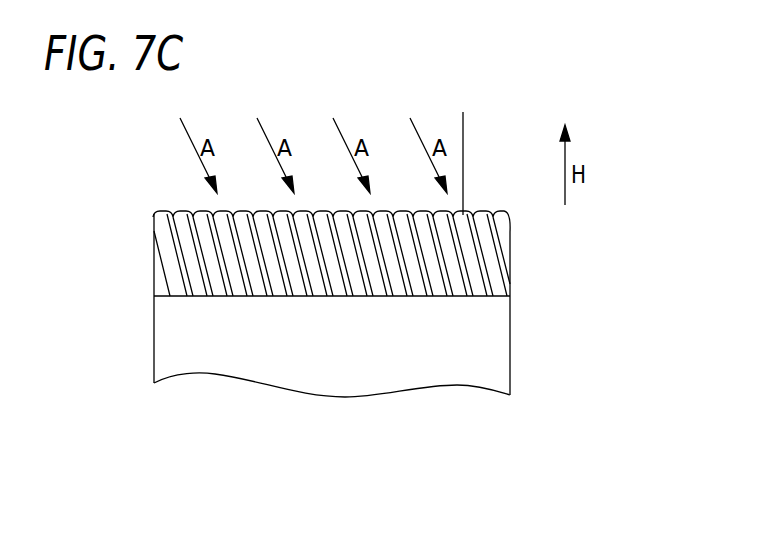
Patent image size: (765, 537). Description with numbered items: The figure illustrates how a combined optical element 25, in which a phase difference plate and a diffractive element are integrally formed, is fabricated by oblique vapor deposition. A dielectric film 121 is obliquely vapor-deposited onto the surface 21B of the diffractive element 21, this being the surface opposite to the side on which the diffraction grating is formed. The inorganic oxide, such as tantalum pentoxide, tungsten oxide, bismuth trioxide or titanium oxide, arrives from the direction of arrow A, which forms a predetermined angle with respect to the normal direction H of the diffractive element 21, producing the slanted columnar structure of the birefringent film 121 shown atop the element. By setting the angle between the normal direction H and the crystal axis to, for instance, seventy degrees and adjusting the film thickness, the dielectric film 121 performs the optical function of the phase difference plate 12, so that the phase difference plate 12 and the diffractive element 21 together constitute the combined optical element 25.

The dielectric film 121 is at (164, 266).
The phase difference plate 12 is at (510, 233).
The diffractive element 21 is at (372, 353).
The surface 21B is at (466, 295).
The combined optical element 25 is at (362, 288).